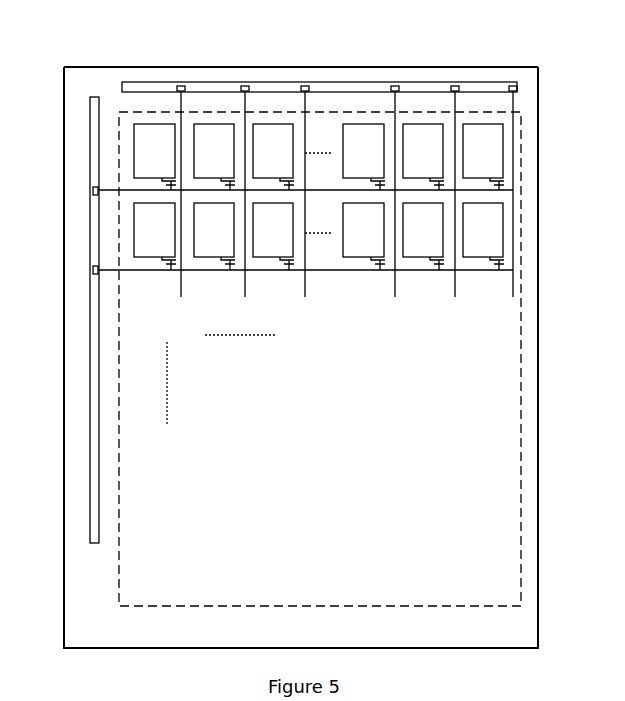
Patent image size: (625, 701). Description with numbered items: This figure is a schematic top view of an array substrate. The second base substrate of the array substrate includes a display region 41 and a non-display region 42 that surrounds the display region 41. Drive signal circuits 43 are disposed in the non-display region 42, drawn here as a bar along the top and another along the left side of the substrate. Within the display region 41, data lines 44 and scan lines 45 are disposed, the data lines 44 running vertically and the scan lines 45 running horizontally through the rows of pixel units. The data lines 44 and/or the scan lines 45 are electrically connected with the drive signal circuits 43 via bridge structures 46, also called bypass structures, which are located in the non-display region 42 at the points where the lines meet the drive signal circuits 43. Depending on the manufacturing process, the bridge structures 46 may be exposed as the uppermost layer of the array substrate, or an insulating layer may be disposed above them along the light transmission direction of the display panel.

The display region 41 is at (508, 398).
The non-display region 42 is at (530, 82).
The drive signal circuits 43 is at (214, 85).
The data lines 44 is at (513, 240).
The scan lines 45 is at (377, 270).
The bridge structures 46 is at (181, 86).